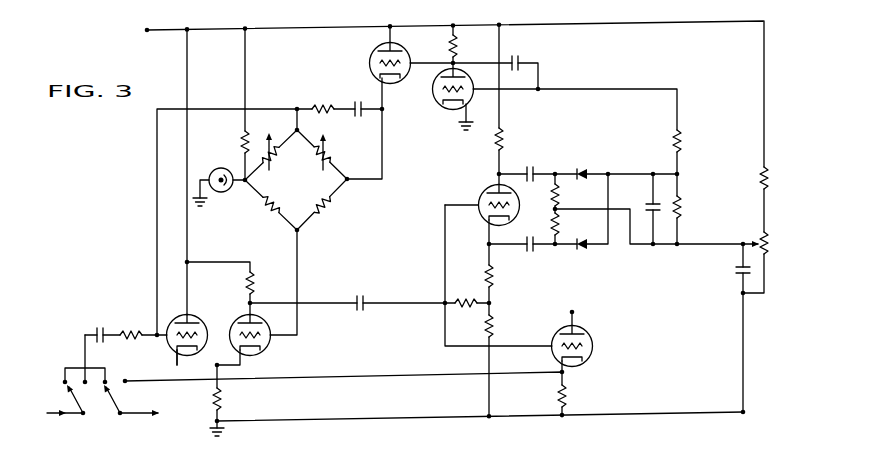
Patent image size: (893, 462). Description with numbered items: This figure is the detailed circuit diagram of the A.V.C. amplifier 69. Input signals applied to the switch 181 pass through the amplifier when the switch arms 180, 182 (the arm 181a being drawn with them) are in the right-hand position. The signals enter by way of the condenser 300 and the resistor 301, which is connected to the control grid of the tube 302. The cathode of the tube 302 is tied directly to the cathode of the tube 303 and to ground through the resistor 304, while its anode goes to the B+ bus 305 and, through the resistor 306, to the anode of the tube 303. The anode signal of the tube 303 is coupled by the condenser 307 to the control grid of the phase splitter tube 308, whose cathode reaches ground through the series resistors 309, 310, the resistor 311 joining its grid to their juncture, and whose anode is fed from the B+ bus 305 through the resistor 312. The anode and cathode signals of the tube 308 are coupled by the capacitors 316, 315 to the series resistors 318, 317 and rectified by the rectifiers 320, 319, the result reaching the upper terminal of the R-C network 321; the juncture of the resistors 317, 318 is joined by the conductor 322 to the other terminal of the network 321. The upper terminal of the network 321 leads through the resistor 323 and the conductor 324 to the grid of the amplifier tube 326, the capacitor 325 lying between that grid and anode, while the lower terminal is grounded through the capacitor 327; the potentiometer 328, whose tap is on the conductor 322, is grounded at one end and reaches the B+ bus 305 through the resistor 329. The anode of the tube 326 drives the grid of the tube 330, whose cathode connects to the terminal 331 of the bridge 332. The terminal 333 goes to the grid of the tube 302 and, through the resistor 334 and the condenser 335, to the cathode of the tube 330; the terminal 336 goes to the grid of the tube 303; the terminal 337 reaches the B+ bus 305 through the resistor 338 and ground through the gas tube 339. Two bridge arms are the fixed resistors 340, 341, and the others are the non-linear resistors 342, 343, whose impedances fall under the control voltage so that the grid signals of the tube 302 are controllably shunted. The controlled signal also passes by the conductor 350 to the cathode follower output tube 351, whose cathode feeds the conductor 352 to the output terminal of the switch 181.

The A.V.C. amplifier 69 is at (424, 16).
The B+ bus 305 is at (203, 29).
The tube 330 is at (374, 51).
The amplifier tube 326 is at (439, 102).
The capacitor 325 is at (515, 57).
The conductor 324 is at (657, 89).
The resistor 323 is at (680, 140).
The resistor 329 is at (767, 178).
The potentiometer 328 is at (768, 241).
The capacitor 327 is at (738, 273).
The conductor 322 is at (640, 247).
The R-C network 321 is at (665, 183).
The rectifier 320 is at (586, 178).
The resistor 318 is at (560, 194).
The resistor 317 is at (560, 230).
The rectifier 319 is at (589, 248).
The capacitor 316 is at (527, 168).
The capacitor 315 is at (533, 255).
The resistor 312 is at (503, 143).
The phase splitter tube 308 is at (483, 190).
The resistor 309 is at (494, 282).
The resistor 310 is at (494, 325).
The resistor 311 is at (474, 298).
The condenser 307 is at (362, 311).
The conductor 350 is at (503, 347).
The cathode follower output tube 351 is at (588, 337).
The conductor 352 is at (351, 377).
The resistor 306 is at (254, 286).
The tube 302 is at (195, 318).
The tube 303 is at (272, 346).
The resistor 304 is at (221, 401).
The condenser 300 is at (100, 326).
The resistor 301 is at (129, 329).
The switch arm 181a is at (78, 368).
The switch arm 180 is at (72, 402).
The switch 181 is at (102, 410).
The switch arm 182 is at (113, 400).
The bridge 332 is at (305, 183).
The non-linear resistor 343 is at (271, 147).
The non-linear resistor 342 is at (329, 157).
The fixed resistor 341 is at (270, 208).
The fixed resistor 340 is at (327, 206).
The terminal 333 is at (300, 130).
The terminal 331 is at (351, 183).
The terminal 337 is at (244, 187).
The terminal 336 is at (301, 233).
The resistor 334 is at (328, 99).
The condenser 335 is at (358, 117).
The resistor 338 is at (238, 146).
The gas tube 339 is at (219, 179).